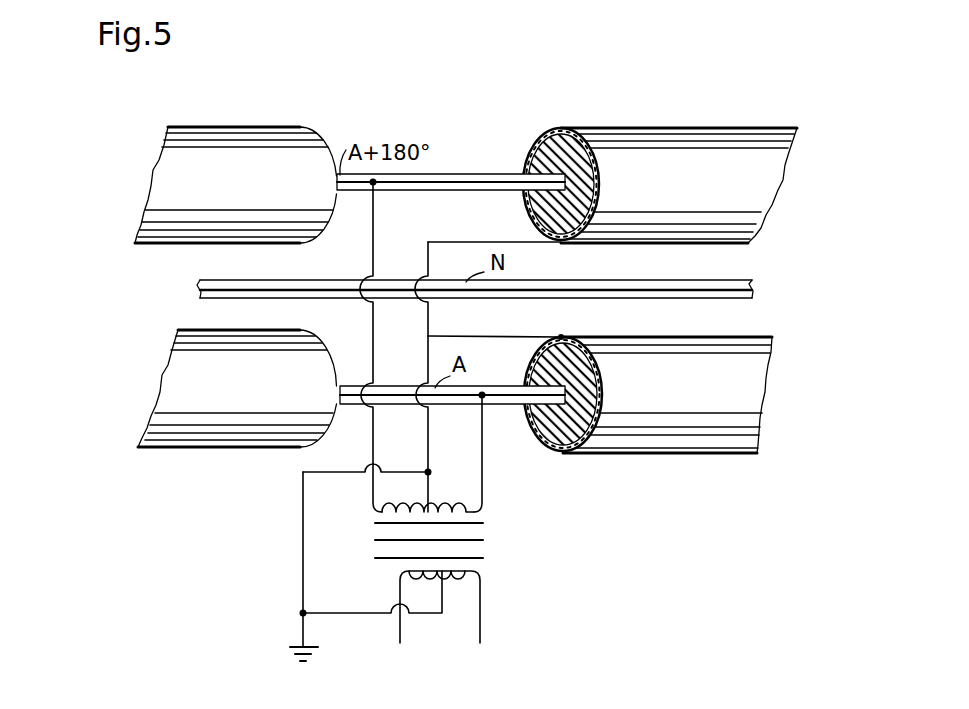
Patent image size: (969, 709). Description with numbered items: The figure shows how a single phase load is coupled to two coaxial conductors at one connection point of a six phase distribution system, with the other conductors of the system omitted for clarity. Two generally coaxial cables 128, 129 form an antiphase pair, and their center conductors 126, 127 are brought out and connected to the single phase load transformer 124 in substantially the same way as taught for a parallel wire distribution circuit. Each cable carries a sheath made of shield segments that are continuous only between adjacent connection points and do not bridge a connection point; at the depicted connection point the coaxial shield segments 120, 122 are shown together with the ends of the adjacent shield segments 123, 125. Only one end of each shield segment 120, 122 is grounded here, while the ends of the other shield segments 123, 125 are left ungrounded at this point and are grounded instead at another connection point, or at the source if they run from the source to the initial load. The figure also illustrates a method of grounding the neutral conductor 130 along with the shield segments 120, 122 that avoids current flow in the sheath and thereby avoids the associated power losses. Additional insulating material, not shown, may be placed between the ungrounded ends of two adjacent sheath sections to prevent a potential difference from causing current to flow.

The coaxial shield segment 120 is at (615, 128).
The coaxial shield segment 122 is at (632, 454).
The shield segment 123 is at (228, 330).
The single phase load transformer 124 is at (418, 620).
The shield segment 125 is at (205, 126).
The center conductor 126 is at (433, 167).
The center conductor 127 is at (494, 412).
The coaxial cable 128 is at (752, 193).
The coaxial cable 129 is at (745, 372).
The neutral conductor 130 is at (748, 289).